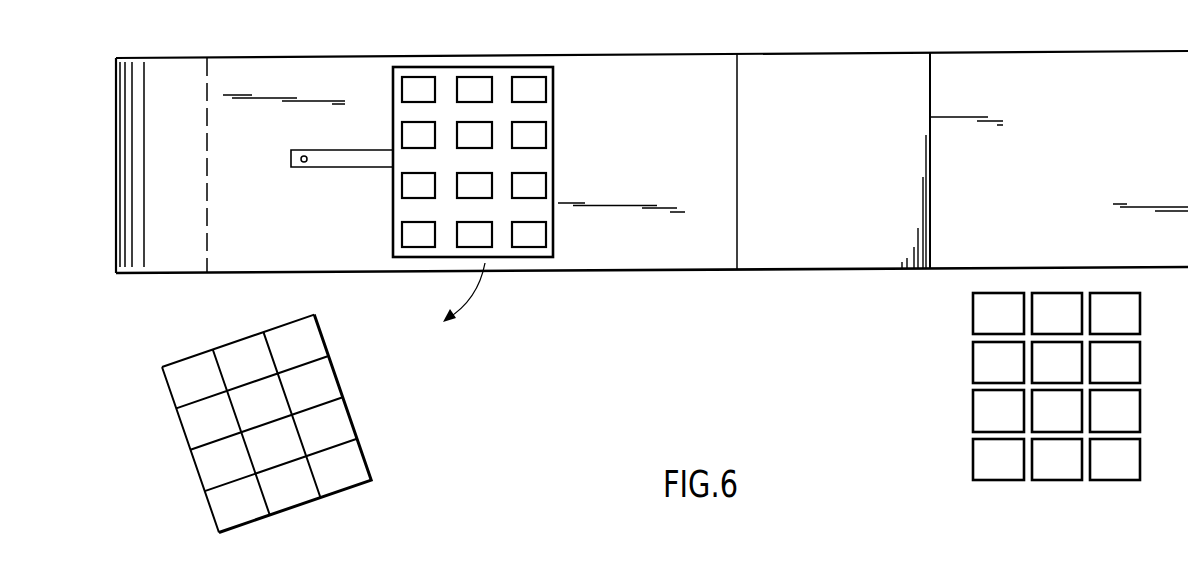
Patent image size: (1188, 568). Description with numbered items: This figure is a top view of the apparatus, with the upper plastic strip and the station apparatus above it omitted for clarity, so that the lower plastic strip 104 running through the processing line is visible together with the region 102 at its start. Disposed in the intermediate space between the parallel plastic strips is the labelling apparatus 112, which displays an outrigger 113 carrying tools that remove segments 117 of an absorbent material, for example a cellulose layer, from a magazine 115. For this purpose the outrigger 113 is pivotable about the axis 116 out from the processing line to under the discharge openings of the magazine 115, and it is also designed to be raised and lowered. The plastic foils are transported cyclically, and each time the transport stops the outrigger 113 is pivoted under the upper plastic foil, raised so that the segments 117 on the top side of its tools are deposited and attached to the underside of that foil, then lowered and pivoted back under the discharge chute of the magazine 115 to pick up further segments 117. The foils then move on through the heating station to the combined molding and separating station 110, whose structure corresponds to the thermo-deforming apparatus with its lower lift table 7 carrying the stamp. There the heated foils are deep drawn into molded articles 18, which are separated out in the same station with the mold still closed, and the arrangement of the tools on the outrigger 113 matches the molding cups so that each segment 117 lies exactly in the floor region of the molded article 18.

The lower lift table 7 is at (873, 252).
The molded articles 18 is at (1038, 360).
The striped web region 102 is at (165, 76).
The plastic strip 104 is at (262, 73).
The combined molding and separating station 110 is at (811, 283).
The labelling apparatus 112 is at (495, 193).
The outrigger 113 is at (343, 161).
The magazine 115 is at (367, 453).
The axis 116 is at (302, 163).
The segments 117 is at (535, 136).